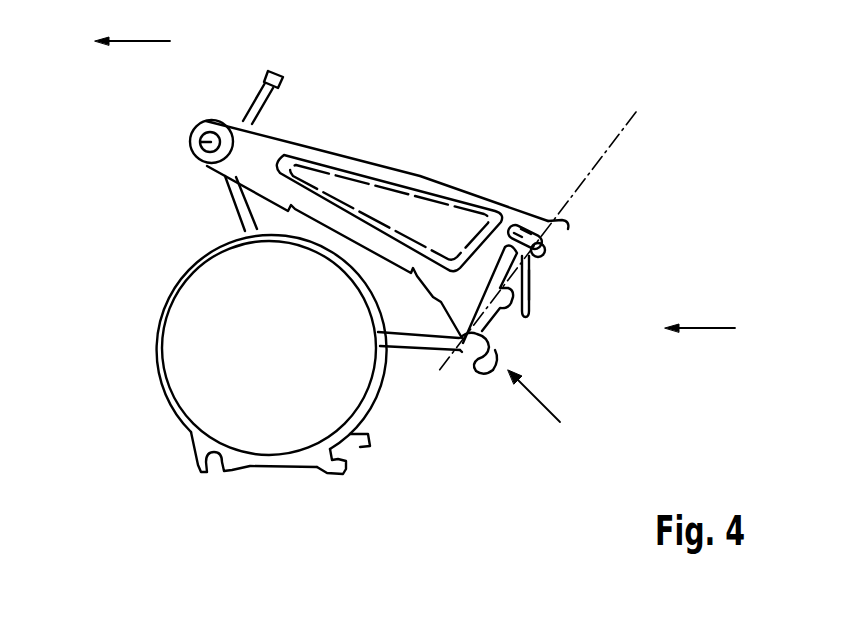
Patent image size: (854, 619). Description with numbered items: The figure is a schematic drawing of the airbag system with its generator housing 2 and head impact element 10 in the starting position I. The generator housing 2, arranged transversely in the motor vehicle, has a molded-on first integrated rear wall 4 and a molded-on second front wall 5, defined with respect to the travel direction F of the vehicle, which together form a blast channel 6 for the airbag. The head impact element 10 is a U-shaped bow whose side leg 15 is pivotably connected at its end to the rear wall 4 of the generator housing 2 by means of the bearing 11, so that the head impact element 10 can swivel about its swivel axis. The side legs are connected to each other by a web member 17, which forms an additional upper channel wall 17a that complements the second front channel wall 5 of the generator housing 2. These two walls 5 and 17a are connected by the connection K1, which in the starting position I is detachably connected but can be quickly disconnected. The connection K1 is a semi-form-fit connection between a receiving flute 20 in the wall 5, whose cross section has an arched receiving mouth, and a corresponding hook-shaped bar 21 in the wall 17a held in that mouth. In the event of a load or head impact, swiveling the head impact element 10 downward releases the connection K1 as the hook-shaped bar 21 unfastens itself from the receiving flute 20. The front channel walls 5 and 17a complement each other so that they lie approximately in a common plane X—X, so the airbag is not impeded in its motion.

The generator housing 2 is at (165, 402).
The first integrated rear wall 4 is at (222, 194).
The second front wall 5 is at (515, 312).
The blast channel 6 is at (367, 135).
The head impact element 10 is at (377, 187).
The bearing 11 is at (191, 136).
The side leg 15 is at (470, 191).
The web member 17 is at (537, 272).
The upper channel wall 17a is at (530, 285).
The receiving flute 20 is at (478, 372).
The hook-shaped bar 21 is at (462, 352).
The travel direction F is at (132, 24).
The starting position I is at (708, 331).
The common plane X— X is at (535, 249).
The connection K1 is at (548, 418).